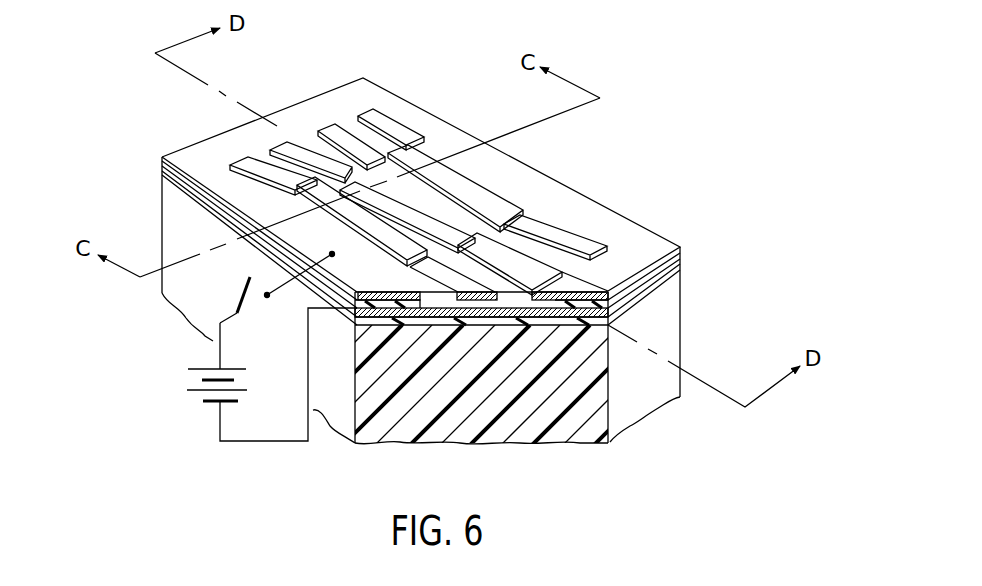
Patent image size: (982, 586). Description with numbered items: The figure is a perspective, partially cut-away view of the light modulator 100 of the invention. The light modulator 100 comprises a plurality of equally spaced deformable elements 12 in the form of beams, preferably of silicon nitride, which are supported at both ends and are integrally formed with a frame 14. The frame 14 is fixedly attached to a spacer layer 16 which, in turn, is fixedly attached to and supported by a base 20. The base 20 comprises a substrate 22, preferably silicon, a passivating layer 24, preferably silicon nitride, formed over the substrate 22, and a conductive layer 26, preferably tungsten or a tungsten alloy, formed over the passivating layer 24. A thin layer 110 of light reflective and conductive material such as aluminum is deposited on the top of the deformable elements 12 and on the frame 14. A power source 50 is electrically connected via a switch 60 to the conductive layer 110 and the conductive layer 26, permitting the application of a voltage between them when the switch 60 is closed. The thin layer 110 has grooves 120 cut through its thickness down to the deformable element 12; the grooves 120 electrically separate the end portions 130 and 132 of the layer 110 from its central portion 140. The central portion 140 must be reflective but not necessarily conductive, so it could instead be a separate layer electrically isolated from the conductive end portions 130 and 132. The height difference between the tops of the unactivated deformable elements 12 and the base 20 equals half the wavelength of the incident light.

The light modulator 100 is at (626, 83).
The deformable elements 12 is at (273, 163).
The frame 14 is at (557, 195).
The spacer layer 16 is at (683, 257).
The base 20 is at (145, 207).
The substrate 22 is at (648, 397).
The passivating layer 24 is at (683, 275).
The conductive layer 26 is at (683, 265).
The power source 50 is at (200, 412).
The switch 60 is at (233, 310).
The thin layer of light reflective and conductive material 110 is at (321, 146).
The grooves 120 is at (392, 150).
The end portion 130 is at (310, 141).
The end portion 132 is at (557, 240).
The central portion 140 is at (453, 185).